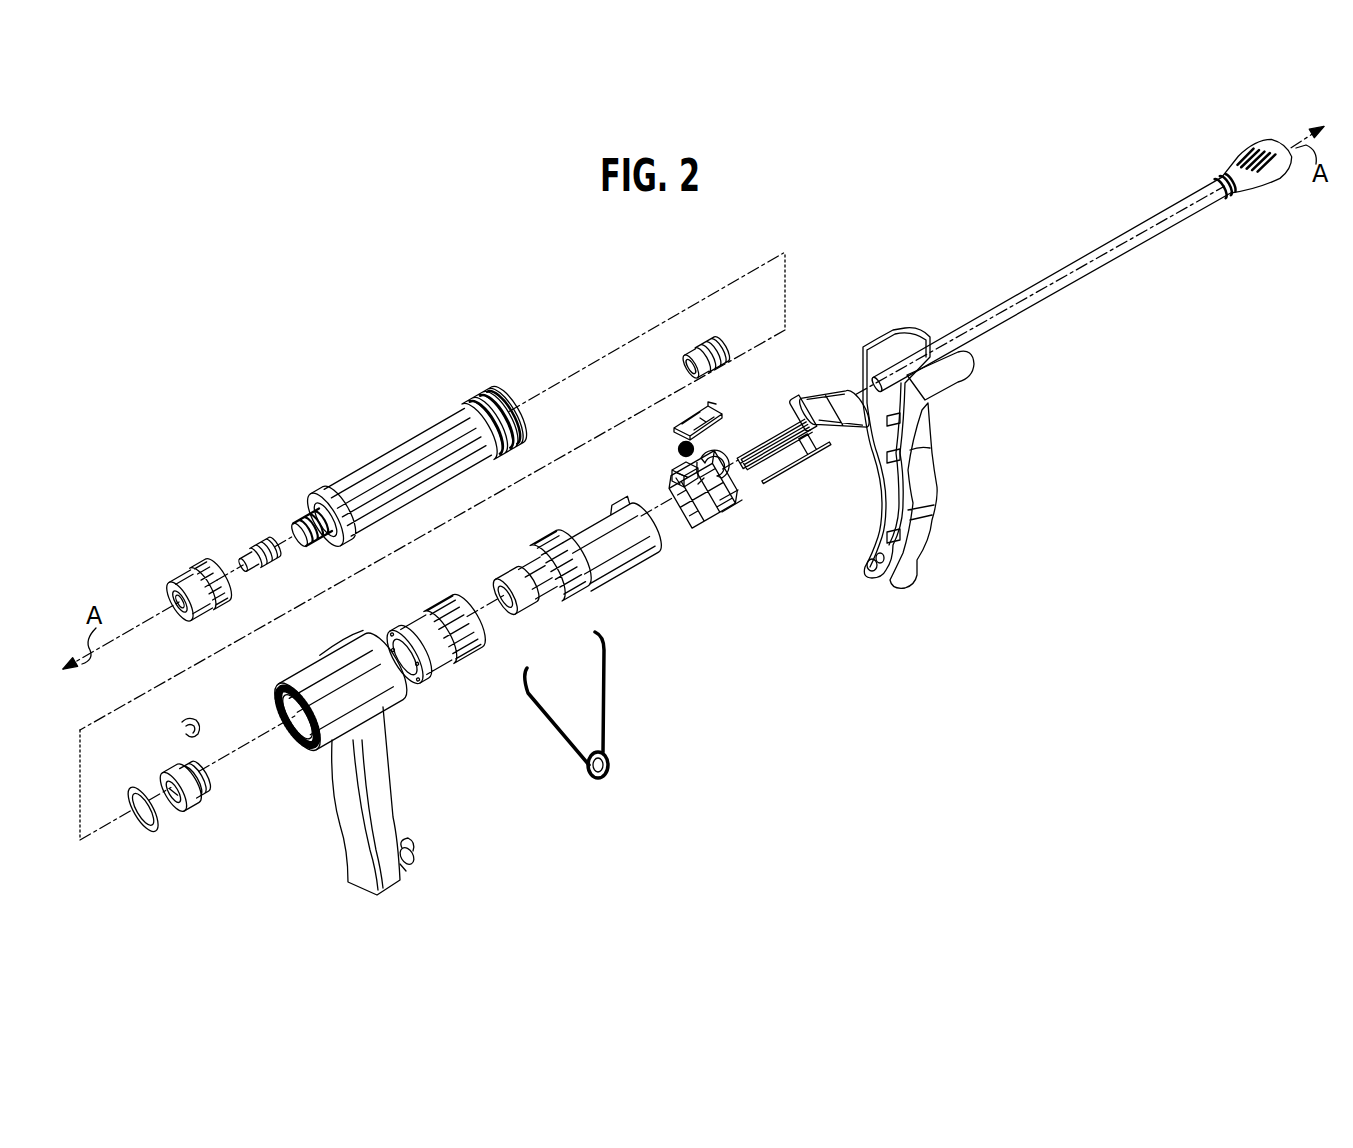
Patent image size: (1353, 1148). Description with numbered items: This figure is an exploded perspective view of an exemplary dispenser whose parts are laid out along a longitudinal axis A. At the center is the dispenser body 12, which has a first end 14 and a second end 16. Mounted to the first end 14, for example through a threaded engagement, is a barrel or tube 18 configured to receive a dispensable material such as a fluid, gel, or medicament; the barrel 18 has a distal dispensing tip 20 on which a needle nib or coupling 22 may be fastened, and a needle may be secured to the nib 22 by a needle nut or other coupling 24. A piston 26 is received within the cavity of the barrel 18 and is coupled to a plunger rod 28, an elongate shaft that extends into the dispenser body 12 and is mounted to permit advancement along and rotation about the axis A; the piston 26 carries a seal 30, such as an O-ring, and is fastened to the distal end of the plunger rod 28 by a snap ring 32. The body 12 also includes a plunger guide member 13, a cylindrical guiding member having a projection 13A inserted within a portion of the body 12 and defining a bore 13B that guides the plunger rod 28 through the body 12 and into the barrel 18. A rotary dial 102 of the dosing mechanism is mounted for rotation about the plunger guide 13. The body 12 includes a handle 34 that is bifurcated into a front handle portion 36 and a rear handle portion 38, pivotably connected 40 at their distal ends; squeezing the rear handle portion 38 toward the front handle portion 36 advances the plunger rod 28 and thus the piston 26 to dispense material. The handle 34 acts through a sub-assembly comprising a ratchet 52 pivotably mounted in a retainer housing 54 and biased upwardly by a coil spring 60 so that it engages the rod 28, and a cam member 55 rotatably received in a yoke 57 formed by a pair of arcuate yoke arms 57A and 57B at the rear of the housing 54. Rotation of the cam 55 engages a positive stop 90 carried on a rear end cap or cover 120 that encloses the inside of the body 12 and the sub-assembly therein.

The dispenser body 12 is at (568, 728).
The plunger guide member 13 is at (561, 577).
The projection 13A is at (518, 577).
The bore 13B is at (492, 618).
The first end 14 is at (568, 728).
The second end 16 is at (919, 441).
The barrel 18 is at (411, 482).
The dispensing tip 20 is at (316, 524).
The needle nib 22 is at (262, 548).
The needle nut 24 is at (202, 576).
The piston 26 is at (201, 798).
The plunger rod 28 is at (1073, 284).
The seal 30 is at (146, 838).
The snap ring 32 is at (177, 723).
The handle 34 is at (942, 469).
The front handle portion 36 is at (395, 778).
The rear handle portion 38 is at (937, 462).
The pivotable connection 40 is at (412, 862).
The ratchet 52 is at (714, 406).
The retainer housing 54 is at (728, 510).
The cam member 55 is at (699, 352).
The yoke 57 is at (710, 452).
The yoke arm 57A is at (680, 472).
The yoke arm 57B is at (738, 492).
The coil spring 60 is at (676, 451).
The positive stop 90 is at (800, 410).
The rotary dial 102 is at (452, 664).
The rear end cap 120 is at (805, 439).